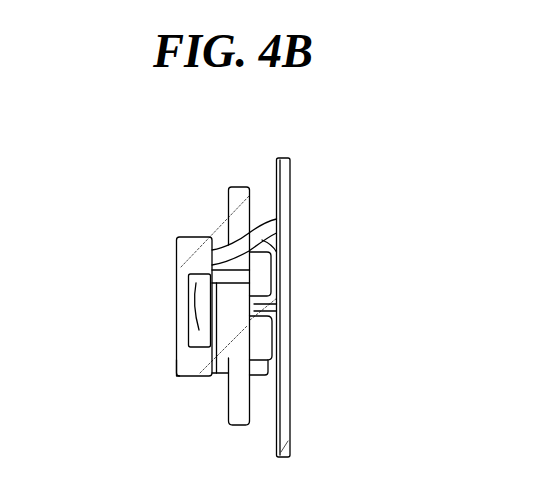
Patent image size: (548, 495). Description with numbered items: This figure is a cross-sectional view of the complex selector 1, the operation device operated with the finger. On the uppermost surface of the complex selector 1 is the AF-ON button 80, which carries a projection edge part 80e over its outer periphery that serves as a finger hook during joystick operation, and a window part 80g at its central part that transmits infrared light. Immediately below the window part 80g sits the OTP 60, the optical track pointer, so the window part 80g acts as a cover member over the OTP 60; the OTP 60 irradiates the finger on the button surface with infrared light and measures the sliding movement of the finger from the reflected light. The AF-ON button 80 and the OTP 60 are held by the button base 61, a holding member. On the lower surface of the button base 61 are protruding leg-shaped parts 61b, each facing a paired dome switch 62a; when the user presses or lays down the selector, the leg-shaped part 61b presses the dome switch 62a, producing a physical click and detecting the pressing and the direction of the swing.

The complex selector 1 is at (329, 164).
The button base 61 is at (228, 373).
The leg-shaped part 61b is at (256, 310).
The dome switch 62a is at (258, 307).
The AF-ON button 80 is at (200, 250).
The window part 80g is at (177, 293).
The projection edge part 80e is at (178, 374).
The OTP 60 is at (189, 336).